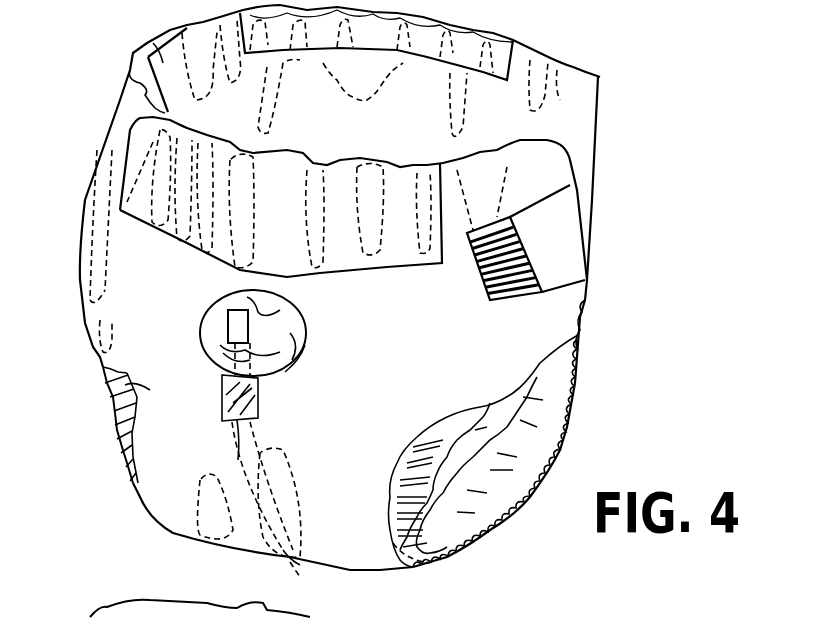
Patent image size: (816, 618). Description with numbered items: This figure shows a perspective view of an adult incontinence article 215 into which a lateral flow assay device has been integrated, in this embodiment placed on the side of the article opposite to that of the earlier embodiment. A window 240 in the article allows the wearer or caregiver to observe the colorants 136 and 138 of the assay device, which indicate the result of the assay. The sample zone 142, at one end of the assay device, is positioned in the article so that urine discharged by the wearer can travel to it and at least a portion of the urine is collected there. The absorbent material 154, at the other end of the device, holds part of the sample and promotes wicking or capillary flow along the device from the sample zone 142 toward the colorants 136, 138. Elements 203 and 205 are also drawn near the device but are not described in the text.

The colorant 136 is at (237, 420).
The colorant 138 is at (223, 353).
The sample zone 142 is at (287, 570).
The absorbent material 154 is at (247, 307).
The attachment ring 203 is at (267, 310).
The ring opening 205 is at (307, 353).
The adult incontinence article 215 is at (150, 390).
The window 240 is at (263, 407).